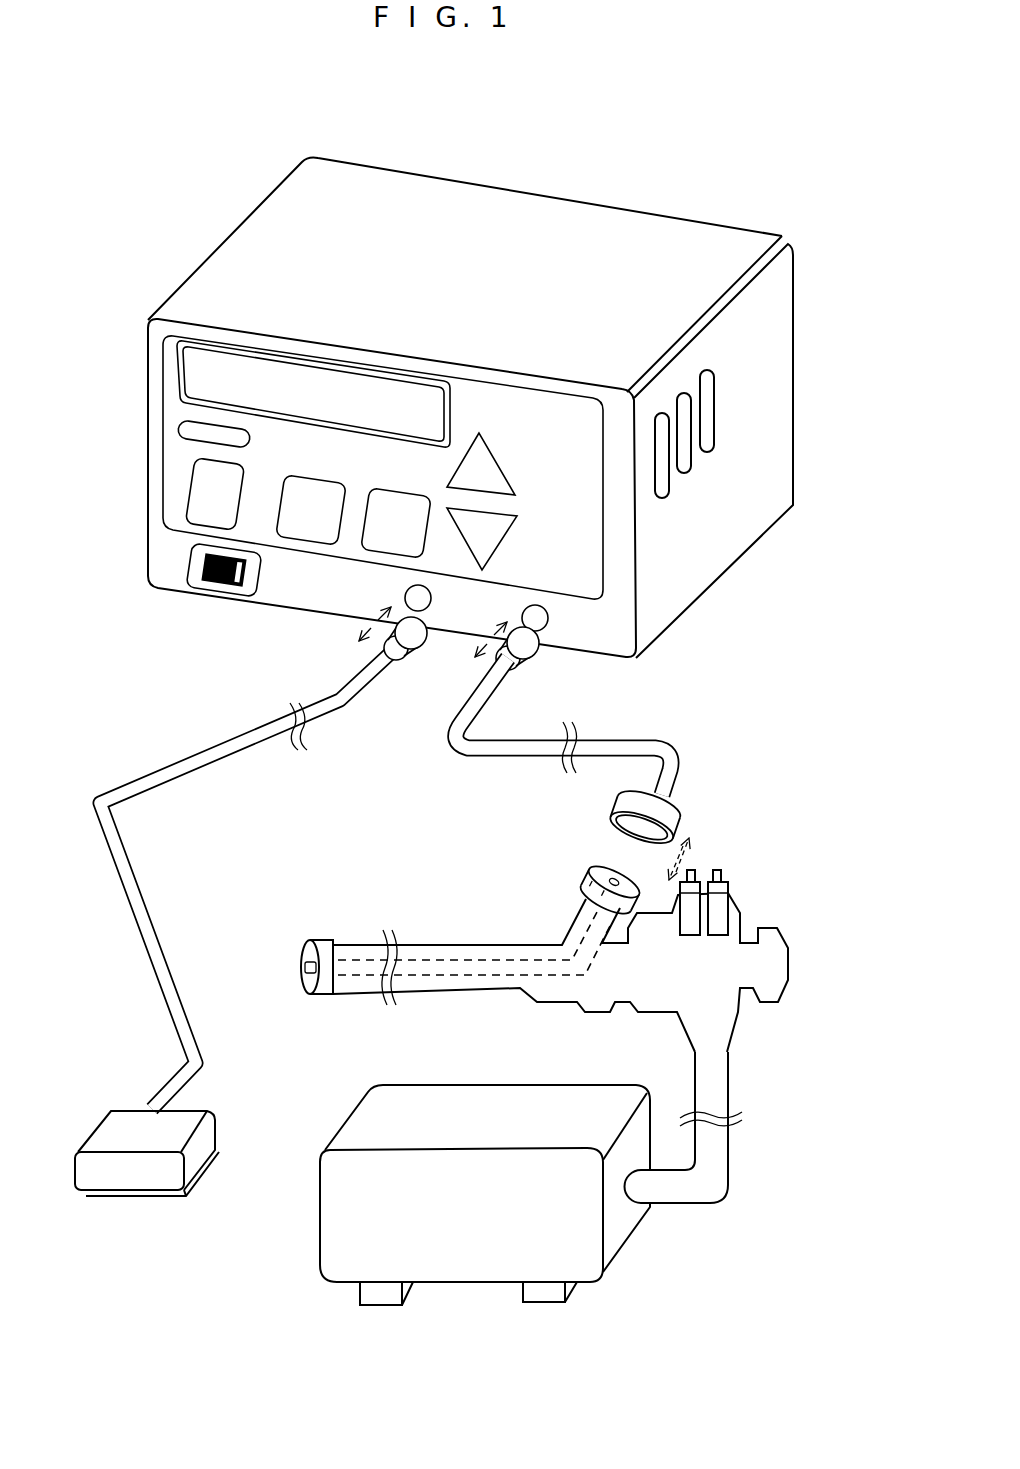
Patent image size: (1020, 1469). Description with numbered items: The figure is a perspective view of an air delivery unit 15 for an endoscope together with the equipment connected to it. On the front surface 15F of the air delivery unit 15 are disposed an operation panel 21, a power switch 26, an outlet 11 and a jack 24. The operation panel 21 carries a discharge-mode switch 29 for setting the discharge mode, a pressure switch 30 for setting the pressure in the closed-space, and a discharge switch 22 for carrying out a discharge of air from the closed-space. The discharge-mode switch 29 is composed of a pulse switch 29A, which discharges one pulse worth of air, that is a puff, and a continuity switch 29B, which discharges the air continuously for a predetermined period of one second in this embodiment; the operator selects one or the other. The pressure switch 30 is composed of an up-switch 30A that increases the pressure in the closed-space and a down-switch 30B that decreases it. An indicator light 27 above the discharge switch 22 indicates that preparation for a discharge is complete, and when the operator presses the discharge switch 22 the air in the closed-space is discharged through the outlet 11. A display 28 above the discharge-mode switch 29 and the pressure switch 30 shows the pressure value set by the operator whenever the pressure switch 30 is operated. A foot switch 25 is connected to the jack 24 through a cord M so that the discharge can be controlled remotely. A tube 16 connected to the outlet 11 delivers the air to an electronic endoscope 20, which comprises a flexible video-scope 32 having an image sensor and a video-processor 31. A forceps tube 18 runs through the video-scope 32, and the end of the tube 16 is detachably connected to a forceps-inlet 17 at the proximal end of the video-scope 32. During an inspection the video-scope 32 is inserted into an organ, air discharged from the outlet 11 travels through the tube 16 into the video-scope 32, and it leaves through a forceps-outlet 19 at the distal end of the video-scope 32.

The air delivery unit 15 is at (692, 215).
The front surface 15F is at (622, 460).
The operation panel 21 is at (603, 570).
The display 28 is at (195, 377).
The indicator light 27 is at (180, 431).
The discharge switch 22 is at (203, 475).
The discharge-mode switch 29 is at (355, 549).
The pulse switch 29A is at (293, 486).
The continuity switch 29B is at (418, 505).
The pressure switch 30 is at (520, 488).
The up-switch 30A is at (478, 462).
The down-switch 30B is at (483, 547).
The power switch 26 is at (245, 593).
The jack 24 is at (404, 640).
The outlet 11 is at (560, 662).
The tube 16 is at (650, 742).
The forceps-inlet 17 is at (610, 880).
The forceps tube 18 is at (482, 953).
The forceps-outlet 19 is at (300, 985).
The electronic endoscope 20 is at (559, 925).
The video-scope 32 is at (740, 927).
The video-processor 31 is at (582, 1257).
The foot switch 25 is at (136, 1198).
The cord M is at (117, 871).